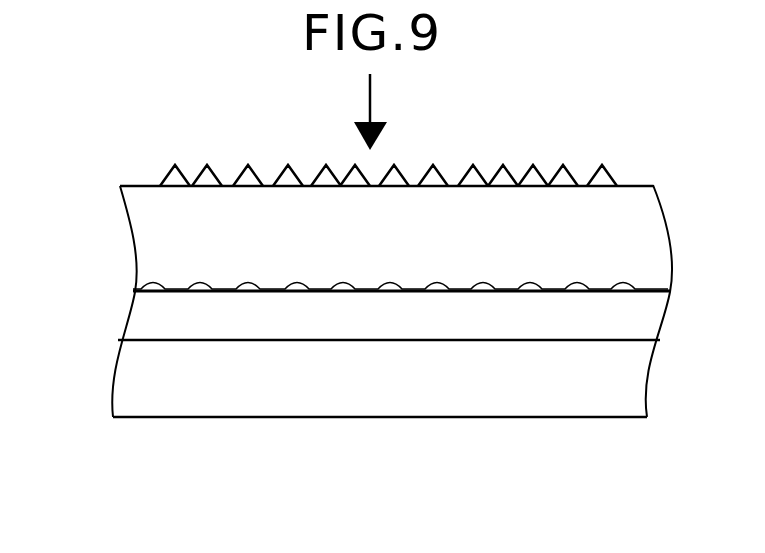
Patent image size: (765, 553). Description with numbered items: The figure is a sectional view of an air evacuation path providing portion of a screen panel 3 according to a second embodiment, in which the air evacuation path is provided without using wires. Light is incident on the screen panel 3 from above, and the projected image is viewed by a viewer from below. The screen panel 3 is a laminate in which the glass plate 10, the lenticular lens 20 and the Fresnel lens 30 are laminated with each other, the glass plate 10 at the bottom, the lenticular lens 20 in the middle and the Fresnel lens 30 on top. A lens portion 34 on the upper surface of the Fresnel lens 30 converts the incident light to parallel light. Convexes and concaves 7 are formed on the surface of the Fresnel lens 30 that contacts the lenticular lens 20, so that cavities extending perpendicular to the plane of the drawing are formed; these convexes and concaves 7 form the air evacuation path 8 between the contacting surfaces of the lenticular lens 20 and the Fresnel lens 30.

The screen panel 3 is at (535, 480).
The convexes and concaves 7 is at (150, 289).
The air evacuation path 8 is at (193, 290).
The glass plate 10 is at (398, 370).
The lenticular lens 20 is at (457, 317).
The Fresnel lens 30 is at (520, 268).
The lens portion 34 is at (615, 180).